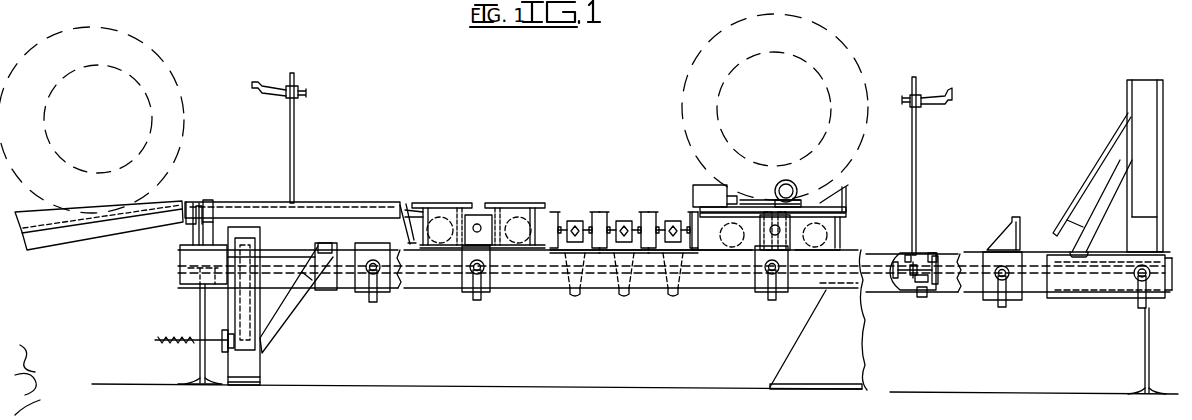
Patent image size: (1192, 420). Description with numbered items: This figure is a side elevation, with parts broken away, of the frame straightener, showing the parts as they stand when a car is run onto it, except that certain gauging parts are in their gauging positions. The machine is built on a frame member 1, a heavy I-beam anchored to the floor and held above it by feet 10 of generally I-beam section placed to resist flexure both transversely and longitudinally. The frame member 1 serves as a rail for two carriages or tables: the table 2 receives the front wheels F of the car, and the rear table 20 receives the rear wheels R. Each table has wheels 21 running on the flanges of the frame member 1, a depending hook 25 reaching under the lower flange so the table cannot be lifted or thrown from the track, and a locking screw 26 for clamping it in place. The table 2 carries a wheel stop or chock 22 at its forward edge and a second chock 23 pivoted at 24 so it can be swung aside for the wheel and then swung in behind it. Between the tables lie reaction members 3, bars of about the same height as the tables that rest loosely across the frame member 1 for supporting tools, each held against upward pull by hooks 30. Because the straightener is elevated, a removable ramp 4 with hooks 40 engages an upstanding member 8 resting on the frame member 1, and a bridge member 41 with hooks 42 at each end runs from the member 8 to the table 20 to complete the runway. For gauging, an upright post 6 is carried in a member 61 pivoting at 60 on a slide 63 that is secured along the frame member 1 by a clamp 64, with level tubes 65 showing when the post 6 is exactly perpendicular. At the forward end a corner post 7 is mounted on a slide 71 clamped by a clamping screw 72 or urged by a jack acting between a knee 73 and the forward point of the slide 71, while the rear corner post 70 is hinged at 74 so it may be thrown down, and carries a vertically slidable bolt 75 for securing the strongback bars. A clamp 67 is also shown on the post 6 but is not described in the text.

The frame member 1 is at (1040, 292).
The table 2 is at (818, 197).
The reaction member 3 is at (558, 212).
The ramp 4 is at (70, 234).
The upright post 6 is at (296, 128).
The corner post 7 is at (1128, 106).
The upstanding member 8 is at (193, 230).
The feet 10 is at (200, 306).
The rear table 20 is at (442, 204).
The wheel 21 is at (520, 250).
The wheel stop or chock 22 is at (846, 200).
The second chock 23 is at (700, 192).
The pivot 24 is at (782, 178).
The depending hook 25 is at (478, 294).
The locking screw 26 is at (375, 300).
The hook 30 is at (624, 296).
The hook 40 is at (206, 202).
The bridge member 41 is at (356, 194).
The hook 42 is at (215, 206).
The pivot 60 is at (884, 292).
The member 61 is at (930, 292).
The slide 63 is at (914, 296).
The clamp 64 is at (920, 300).
The level or bubble tube 65 is at (915, 256).
The clamp 67 is at (268, 98).
The corner post 70 is at (262, 356).
The slide 71 is at (1088, 252).
The clamping screw 72 is at (1138, 290).
The knee 73 is at (1012, 220).
The hinge 74 is at (322, 246).
The bolt 75 is at (172, 342).
The rear wheels R is at (150, 52).
The front wheels F is at (845, 52).